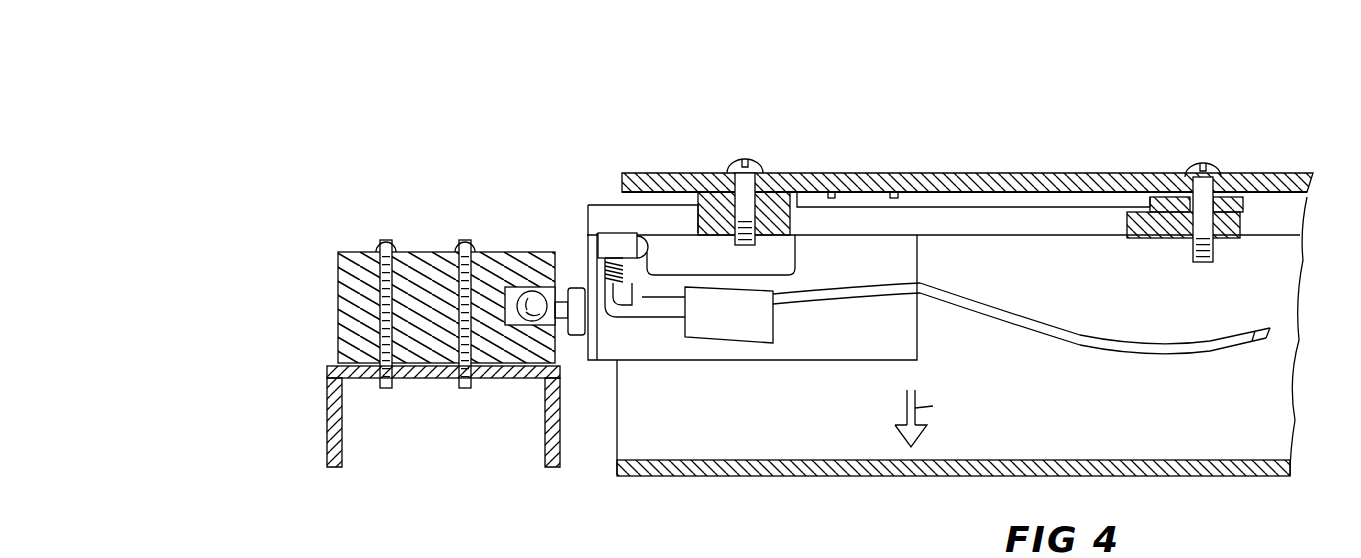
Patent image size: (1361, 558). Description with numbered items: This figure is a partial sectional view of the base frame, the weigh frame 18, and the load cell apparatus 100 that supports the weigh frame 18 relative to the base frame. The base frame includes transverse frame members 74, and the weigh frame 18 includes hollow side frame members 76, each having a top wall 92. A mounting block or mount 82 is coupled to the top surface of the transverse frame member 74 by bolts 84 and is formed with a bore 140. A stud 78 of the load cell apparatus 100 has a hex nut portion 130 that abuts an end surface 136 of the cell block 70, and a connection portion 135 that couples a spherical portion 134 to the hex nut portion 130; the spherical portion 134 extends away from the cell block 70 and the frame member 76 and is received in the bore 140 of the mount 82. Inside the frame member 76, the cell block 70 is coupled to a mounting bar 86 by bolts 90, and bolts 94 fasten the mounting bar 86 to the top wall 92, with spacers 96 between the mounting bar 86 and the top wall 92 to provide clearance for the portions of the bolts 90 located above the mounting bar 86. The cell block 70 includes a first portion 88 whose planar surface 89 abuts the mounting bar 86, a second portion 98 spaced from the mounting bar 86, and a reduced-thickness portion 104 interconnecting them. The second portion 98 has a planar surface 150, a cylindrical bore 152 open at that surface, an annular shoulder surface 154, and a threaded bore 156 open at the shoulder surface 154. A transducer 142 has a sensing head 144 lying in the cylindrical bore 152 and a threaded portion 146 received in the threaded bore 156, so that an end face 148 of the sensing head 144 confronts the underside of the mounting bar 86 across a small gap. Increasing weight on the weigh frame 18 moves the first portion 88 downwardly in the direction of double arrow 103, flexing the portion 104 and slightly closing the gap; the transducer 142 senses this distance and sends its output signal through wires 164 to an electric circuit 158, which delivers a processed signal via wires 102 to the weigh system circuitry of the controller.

The weigh frame 18 is at (1275, 122).
The cell block 70 is at (760, 402).
The transverse frame member 74 is at (327, 436).
The hollow side frame member 76 is at (1255, 428).
The stud 78 is at (573, 350).
The mount 82 is at (417, 240).
The bolts 84 is at (374, 246).
The mounting bar 86 is at (1017, 228).
The first portion 88 is at (902, 268).
The planar surface 89 is at (902, 235).
The bolts 90 is at (872, 192).
The top wall 92 is at (1275, 180).
The bolts 94 is at (762, 163).
The spacers 96 is at (708, 190).
The second portion 98 is at (675, 268).
The load cell apparatus 100 is at (425, 149).
The wires 102 is at (1127, 350).
The double arrow 103 is at (939, 418).
The reduced-thickness portion 104 is at (745, 310).
The hex nut portion 130 is at (574, 287).
The spherical portion 134 is at (548, 288).
The connection portion 135 is at (553, 295).
The end surface 136 is at (581, 288).
The bore 140 is at (510, 292).
The transducer 142 is at (603, 325).
The sensing head 144 is at (606, 232).
The threaded portion 146 is at (620, 320).
The end face 148 is at (636, 238).
The planar surface 150 is at (648, 250).
The cylindrical bore 152 is at (670, 245).
The annular shoulder surface 154 is at (599, 230).
The threaded bore 156 is at (624, 278).
The electric circuit 158 is at (757, 352).
The wires 164 is at (678, 320).